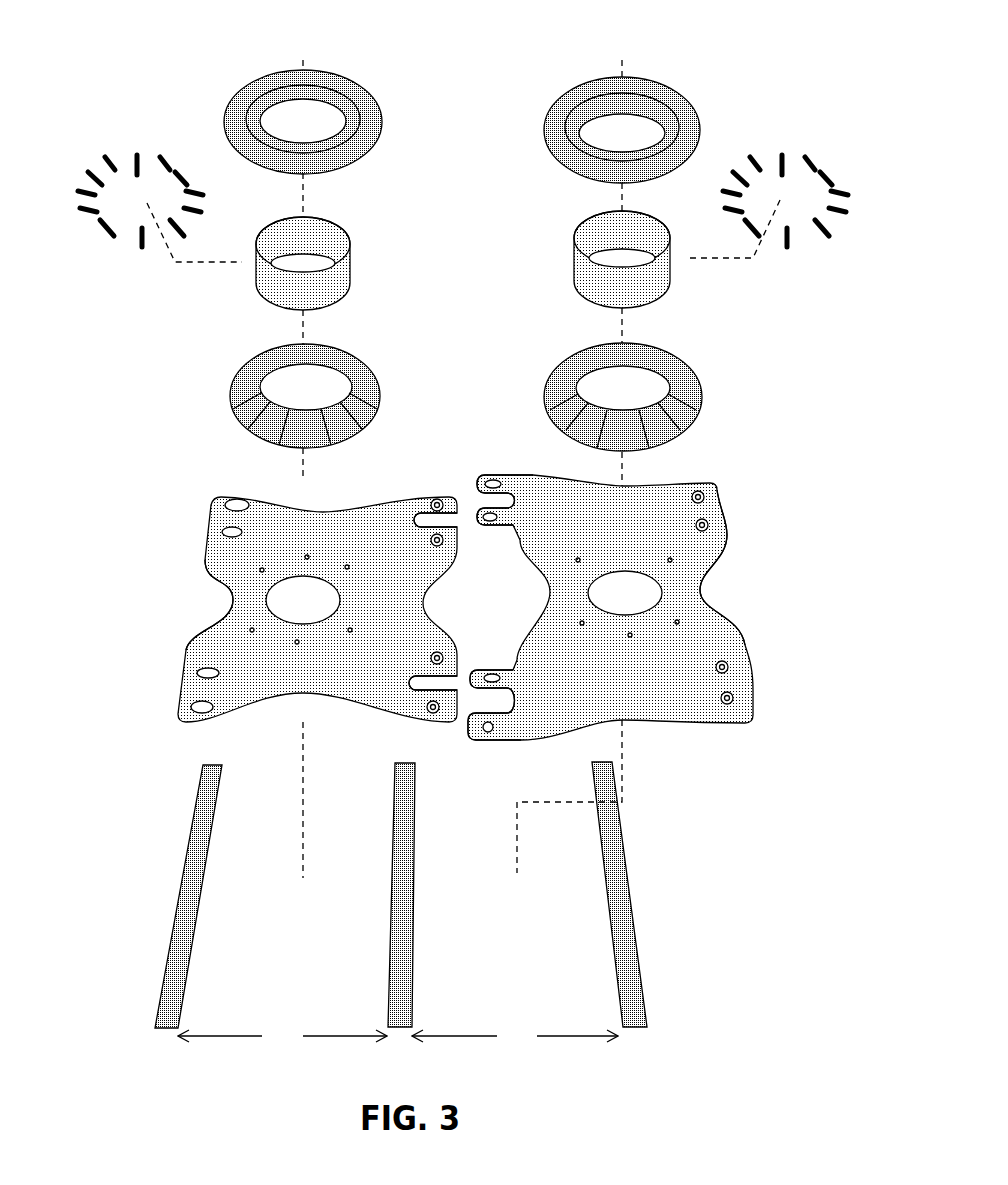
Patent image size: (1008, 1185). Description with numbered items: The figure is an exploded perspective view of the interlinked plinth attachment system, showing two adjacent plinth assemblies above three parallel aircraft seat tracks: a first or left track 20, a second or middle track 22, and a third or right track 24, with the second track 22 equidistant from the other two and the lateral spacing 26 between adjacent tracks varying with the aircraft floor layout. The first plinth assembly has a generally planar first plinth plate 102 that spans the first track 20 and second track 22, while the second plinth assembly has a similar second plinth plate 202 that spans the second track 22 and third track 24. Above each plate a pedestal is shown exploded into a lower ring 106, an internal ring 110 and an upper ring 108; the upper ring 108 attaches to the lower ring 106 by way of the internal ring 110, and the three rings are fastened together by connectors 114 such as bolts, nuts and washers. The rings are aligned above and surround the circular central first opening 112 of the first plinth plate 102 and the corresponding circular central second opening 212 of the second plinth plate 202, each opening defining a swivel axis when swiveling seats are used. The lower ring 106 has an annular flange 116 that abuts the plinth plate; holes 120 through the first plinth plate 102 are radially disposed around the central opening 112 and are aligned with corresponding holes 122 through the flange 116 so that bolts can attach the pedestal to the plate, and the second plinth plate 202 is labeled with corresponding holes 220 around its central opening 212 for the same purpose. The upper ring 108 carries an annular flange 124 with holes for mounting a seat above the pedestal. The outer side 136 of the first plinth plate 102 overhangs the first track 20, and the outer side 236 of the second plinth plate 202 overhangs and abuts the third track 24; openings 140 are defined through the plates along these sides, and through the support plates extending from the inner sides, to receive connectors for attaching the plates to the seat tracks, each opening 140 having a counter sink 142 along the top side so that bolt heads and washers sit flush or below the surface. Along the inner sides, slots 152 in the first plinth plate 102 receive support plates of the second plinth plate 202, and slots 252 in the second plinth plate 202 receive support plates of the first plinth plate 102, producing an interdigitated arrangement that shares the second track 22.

The first track 20 is at (170, 942).
The second track 22 is at (392, 953).
The third track 24 is at (618, 962).
The lateral spacing 26 is at (398, 1036).
The first plinth plate 102 is at (317, 609).
The lower ring 106 is at (232, 393).
The upper ring 108 is at (272, 75).
The internal ring 110 is at (345, 237).
The first opening 112 is at (315, 603).
The connectors 114 is at (123, 147).
The annular flange 116 is at (373, 398).
The holes 120 is at (347, 628).
The holes 122 is at (350, 427).
The annular flange 124 is at (353, 92).
The outer side 136 is at (215, 632).
The openings 140 is at (233, 507).
The counter sink 142 is at (230, 507).
The slots 152 is at (443, 520).
The second plinth plate 202 is at (610, 607).
The second opening 212 is at (638, 598).
The dimples of second plate 220 is at (677, 622).
The outer side 236 is at (717, 548).
The slots 252 is at (495, 503).